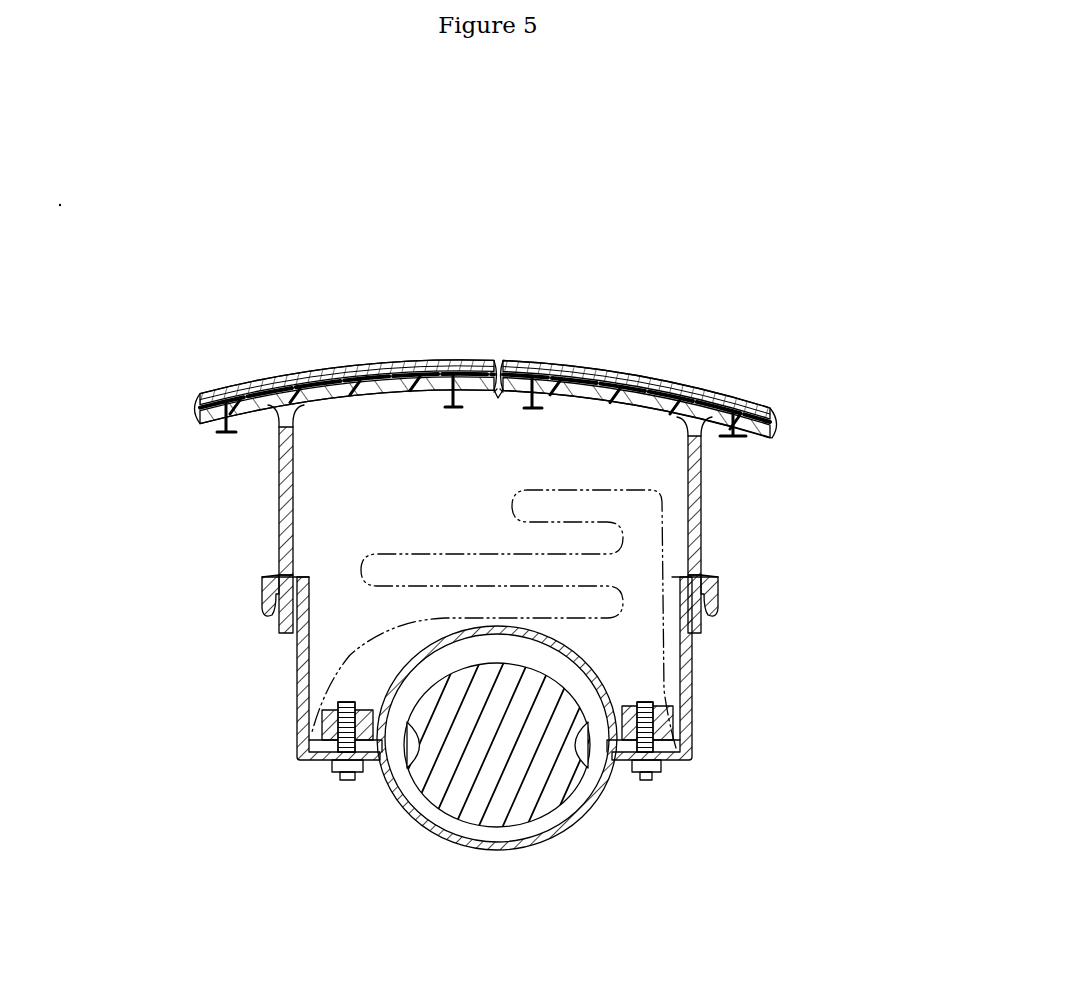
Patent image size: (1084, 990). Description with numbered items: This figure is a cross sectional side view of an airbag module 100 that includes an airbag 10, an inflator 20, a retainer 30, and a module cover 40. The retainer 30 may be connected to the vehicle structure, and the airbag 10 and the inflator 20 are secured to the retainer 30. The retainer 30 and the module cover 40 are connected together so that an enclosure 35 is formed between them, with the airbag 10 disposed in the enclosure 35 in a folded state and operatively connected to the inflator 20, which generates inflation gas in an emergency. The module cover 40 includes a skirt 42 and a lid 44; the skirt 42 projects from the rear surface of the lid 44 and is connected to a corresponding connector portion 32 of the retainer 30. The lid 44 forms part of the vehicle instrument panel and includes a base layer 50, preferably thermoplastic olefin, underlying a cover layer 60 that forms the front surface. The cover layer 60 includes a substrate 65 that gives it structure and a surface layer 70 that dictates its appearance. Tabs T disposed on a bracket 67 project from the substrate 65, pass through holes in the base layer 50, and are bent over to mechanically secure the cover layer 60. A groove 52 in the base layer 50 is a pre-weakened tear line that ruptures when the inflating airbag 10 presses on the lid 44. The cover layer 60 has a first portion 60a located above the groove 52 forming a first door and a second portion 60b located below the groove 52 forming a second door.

The airbag module 100 is at (684, 216).
The cover layer 60 is at (521, 338).
The first portion 60a is at (195, 398).
The second portion 60b is at (783, 421).
The substrate 65 is at (272, 383).
The bracket 67 is at (300, 390).
The surface layer 70 is at (360, 366).
The tabs T is at (222, 428).
The groove 52 is at (490, 396).
The base layer 50 is at (403, 405).
The lid 44 is at (440, 437).
The airbag 10 is at (648, 550).
The enclosure 35 is at (378, 498).
The module cover 40 is at (716, 457).
The skirt 42 is at (280, 530).
The connector portion 32 is at (330, 722).
The retainer 30 is at (697, 732).
The inflator 20 is at (558, 778).